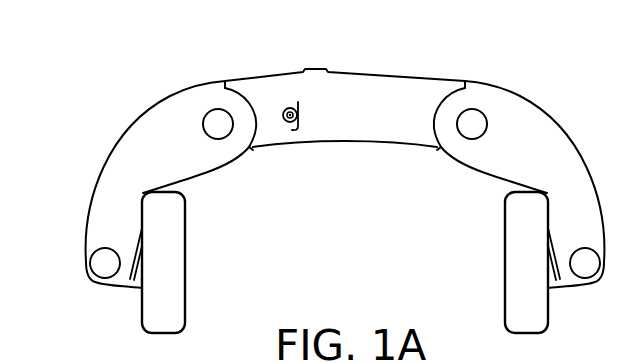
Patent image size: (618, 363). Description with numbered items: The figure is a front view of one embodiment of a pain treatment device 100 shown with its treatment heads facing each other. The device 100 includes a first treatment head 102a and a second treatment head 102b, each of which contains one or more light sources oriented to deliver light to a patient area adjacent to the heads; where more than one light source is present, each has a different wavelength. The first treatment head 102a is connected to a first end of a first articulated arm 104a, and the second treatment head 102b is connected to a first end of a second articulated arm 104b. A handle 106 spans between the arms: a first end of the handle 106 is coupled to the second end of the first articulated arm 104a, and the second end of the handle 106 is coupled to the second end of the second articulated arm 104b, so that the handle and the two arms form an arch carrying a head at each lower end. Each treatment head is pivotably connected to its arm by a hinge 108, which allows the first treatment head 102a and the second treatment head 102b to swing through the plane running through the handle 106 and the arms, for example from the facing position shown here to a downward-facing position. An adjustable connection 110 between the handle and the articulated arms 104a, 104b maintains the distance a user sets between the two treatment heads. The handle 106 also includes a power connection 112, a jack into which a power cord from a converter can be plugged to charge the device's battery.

The pain treatment device 100 is at (138, 62).
The first treatment head 102a is at (185, 270).
The second treatment head 102b is at (505, 270).
The first articulated arm 104a is at (203, 174).
The second articulated arm 104b is at (487, 174).
The handle 106 is at (350, 144).
The hinge 108 is at (102, 268).
The adjustable connection 110 is at (216, 123).
The power connection 112 is at (290, 122).